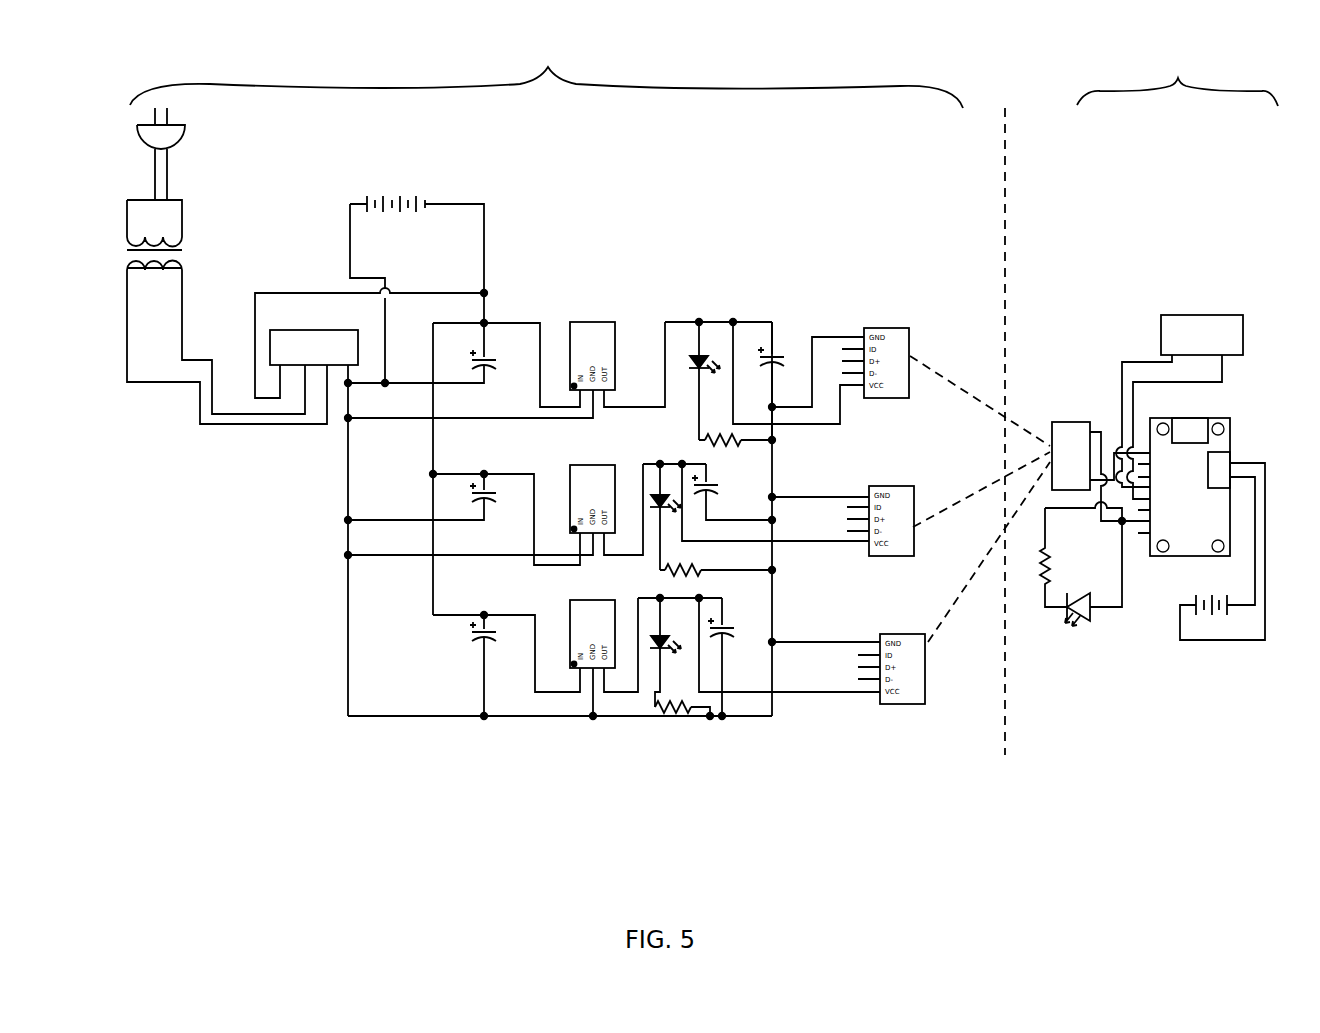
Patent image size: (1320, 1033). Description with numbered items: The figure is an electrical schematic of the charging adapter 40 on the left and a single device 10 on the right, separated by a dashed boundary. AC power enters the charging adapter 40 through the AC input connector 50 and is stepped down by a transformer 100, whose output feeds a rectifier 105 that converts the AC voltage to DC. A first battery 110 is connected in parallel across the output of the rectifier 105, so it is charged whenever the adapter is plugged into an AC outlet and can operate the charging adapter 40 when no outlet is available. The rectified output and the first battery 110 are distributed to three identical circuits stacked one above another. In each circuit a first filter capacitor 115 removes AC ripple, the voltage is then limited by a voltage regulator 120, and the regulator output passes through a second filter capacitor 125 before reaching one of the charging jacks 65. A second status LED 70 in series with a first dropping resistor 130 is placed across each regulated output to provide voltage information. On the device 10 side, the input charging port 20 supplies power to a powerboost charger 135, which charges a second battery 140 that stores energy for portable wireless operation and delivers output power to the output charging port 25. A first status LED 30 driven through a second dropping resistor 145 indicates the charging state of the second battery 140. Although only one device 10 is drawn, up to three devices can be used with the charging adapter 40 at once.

The device 10 is at (1177, 66).
The charging adapter 40 is at (555, 62).
The AC input connector 50 is at (190, 132).
The transformer 100 is at (188, 240).
The rectifier 105 is at (298, 334).
The first battery 110 is at (437, 182).
The first filter capacitor 115 is at (497, 352).
The voltage regulator 120 is at (592, 334).
The second status LED 70 is at (700, 352).
The first dropping resistor 130 is at (718, 428).
The second filter capacitor 125 is at (780, 348).
The charging jacks 65 is at (895, 336).
The input charging port 20 is at (1068, 428).
The output charging port 25 is at (1203, 325).
The powerboost charger 135 is at (1193, 542).
The second battery 140 is at (1215, 622).
The second dropping resistor 145 is at (1045, 568).
The first status LED 30 is at (1082, 622).